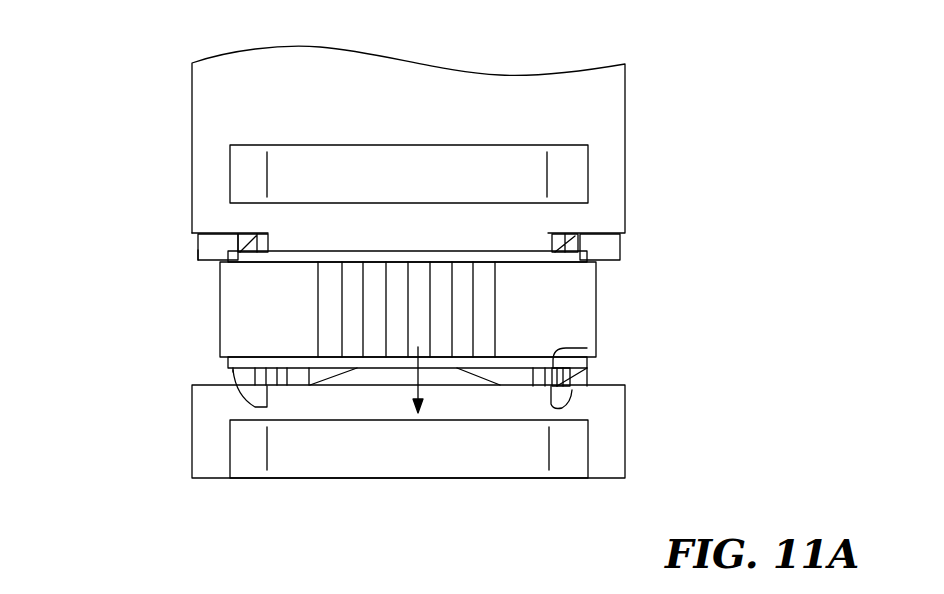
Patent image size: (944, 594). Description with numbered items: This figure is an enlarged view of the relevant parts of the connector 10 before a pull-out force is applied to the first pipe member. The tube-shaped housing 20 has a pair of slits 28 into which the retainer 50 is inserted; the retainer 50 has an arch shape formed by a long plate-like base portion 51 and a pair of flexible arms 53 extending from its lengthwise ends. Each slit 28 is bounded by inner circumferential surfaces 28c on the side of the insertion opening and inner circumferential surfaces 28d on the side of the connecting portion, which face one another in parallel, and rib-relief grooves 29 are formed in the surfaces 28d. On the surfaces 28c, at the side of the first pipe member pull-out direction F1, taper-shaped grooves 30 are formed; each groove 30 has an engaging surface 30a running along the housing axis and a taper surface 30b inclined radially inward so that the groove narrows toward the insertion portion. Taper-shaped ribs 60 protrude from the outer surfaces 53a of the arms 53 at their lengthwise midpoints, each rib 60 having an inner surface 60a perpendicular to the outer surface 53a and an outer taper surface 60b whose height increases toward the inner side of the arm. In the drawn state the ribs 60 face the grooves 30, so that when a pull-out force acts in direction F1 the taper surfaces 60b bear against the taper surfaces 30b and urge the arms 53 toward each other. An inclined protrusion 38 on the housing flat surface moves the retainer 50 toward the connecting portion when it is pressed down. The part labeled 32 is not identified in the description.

The connector 10 is at (637, 112).
The housing 20 is at (185, 132).
The circuit board 32 is at (480, 155).
The rib-relief grooves 29 is at (200, 245).
The inner circumferential surfaces 28d is at (198, 258).
The ribs 60 is at (242, 234).
The retainer 50 is at (434, 310).
The arms 53 is at (226, 262).
The base portion 51 is at (247, 303).
The outer surfaces 53a is at (577, 350).
The inner surfaces 60a is at (553, 367).
The slits 28 is at (203, 365).
The inner circumferential surfaces 28c is at (610, 390).
The taper surfaces 60b is at (230, 383).
The grooves 30 is at (258, 400).
The engaging surfaces 30a is at (275, 393).
The taper surfaces 30b is at (235, 392).
The inclined protrusion 38 is at (377, 378).
The first pipe member pull-out direction F1 is at (418, 398).